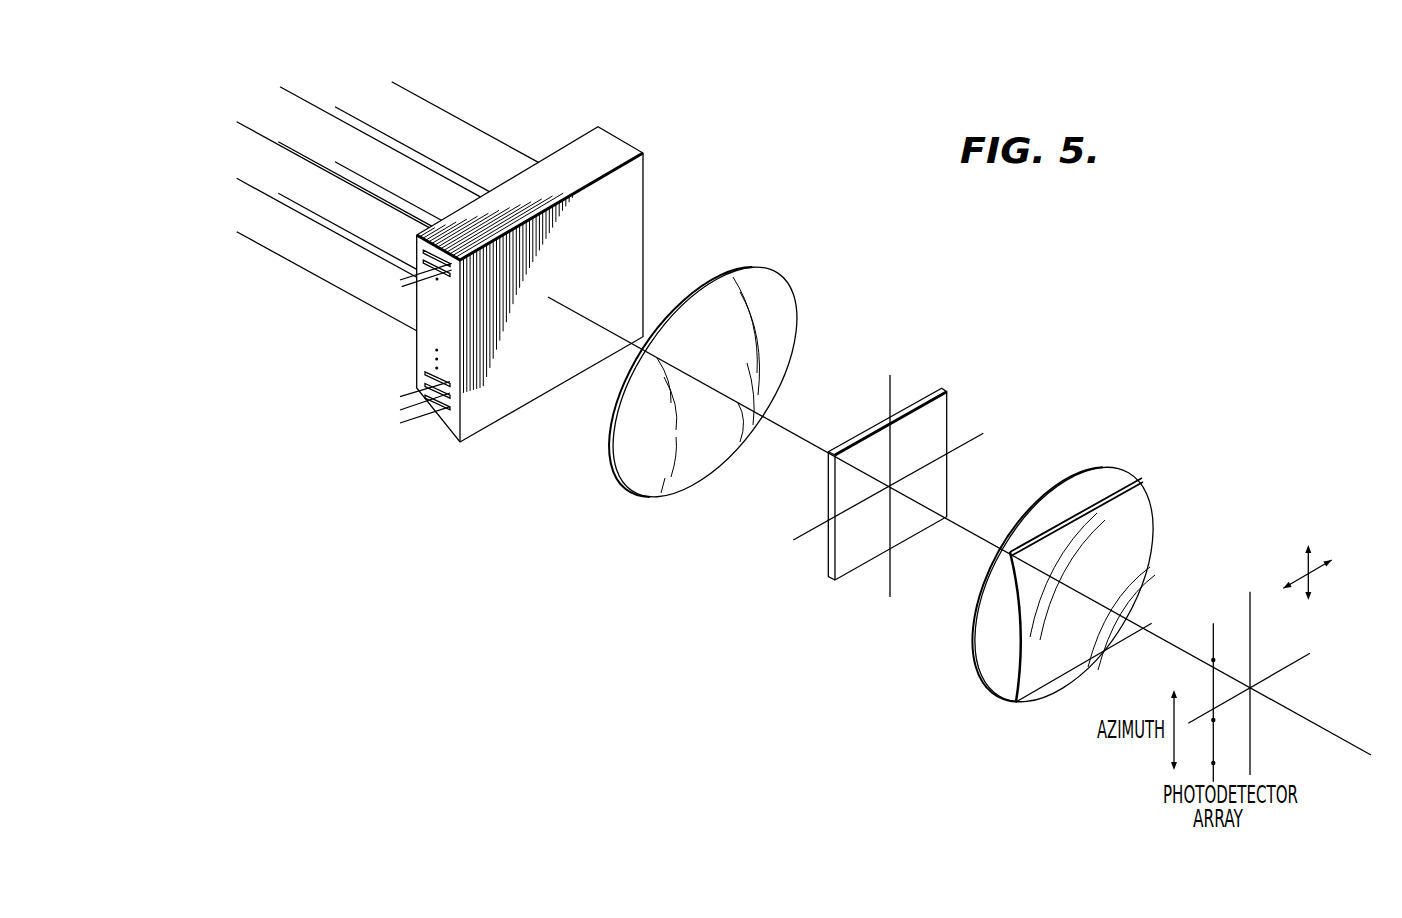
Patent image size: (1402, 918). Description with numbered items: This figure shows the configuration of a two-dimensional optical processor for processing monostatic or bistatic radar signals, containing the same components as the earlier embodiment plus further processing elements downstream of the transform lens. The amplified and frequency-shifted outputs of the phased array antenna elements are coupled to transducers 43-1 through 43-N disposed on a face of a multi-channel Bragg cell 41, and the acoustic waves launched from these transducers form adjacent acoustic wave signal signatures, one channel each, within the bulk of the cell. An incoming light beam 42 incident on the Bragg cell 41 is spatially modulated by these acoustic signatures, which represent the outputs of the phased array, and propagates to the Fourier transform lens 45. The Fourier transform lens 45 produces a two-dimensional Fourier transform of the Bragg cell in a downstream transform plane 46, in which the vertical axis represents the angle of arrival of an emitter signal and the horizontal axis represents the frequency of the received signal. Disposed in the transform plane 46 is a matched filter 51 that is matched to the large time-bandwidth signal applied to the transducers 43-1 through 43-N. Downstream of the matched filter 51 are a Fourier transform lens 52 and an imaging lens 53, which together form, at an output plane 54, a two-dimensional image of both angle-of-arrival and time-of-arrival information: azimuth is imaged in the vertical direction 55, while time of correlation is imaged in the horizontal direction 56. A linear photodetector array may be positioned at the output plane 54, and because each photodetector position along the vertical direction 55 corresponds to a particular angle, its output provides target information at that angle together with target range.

The multi-channel Bragg cell 41 is at (643, 168).
The incoming light beam 42 is at (478, 132).
The transducer 43-1 is at (460, 268).
The transducer 43-N is at (460, 413).
The Fourier transform lens 45 is at (798, 302).
The transform plane 46 is at (889, 458).
The matched filter 51 is at (938, 425).
The Fourier transform lens 52 is at (1087, 427).
The imaging lens 53 is at (1071, 564).
The output plane 54 is at (1323, 545).
The vertical direction 55 is at (1268, 592).
The Fourier transform axis line 56 is at (1293, 663).